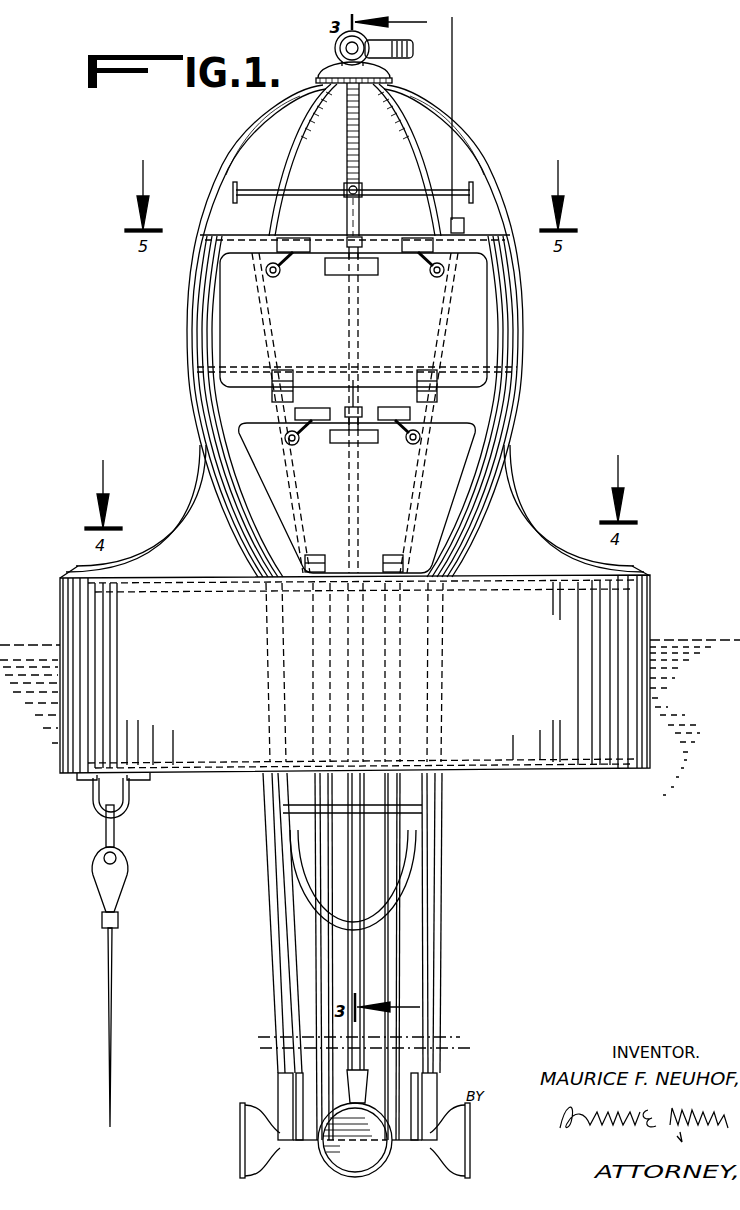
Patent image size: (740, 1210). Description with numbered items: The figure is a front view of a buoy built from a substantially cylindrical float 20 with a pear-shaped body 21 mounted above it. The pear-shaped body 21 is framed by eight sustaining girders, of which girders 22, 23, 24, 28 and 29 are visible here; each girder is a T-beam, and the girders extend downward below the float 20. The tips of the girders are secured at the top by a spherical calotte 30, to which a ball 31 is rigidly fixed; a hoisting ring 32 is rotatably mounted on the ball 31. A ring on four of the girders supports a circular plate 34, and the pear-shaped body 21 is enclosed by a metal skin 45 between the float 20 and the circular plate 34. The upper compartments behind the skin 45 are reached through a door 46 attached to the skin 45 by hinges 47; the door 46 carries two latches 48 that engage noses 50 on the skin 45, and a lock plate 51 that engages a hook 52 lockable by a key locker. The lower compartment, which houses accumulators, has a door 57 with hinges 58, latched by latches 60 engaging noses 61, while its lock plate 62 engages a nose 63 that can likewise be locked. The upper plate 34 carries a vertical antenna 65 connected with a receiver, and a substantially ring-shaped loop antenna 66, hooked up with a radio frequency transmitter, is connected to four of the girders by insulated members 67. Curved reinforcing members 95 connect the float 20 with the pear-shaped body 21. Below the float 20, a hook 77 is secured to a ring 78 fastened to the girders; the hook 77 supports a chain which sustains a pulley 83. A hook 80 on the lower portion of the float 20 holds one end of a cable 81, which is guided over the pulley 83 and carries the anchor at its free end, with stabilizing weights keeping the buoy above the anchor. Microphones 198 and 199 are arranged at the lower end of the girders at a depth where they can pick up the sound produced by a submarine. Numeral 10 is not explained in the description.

The float body 10 is at (72, 610).
The float 20 is at (656, 602).
The pear-shaped body 21 is at (535, 338).
The sustaining girder 22 is at (360, 140).
The sustaining girder 23 is at (420, 144).
The sustaining girder 24 is at (474, 157).
The sustaining girder 28 is at (227, 155).
The sustaining girder 29 is at (283, 156).
The spherical calotte 30 is at (333, 73).
The ball 31 is at (340, 46).
The hoisting ring 32 is at (415, 50).
The circular plate 34 is at (230, 233).
The metal skin 45 is at (522, 270).
The door 46 is at (235, 318).
The hinge 47 is at (280, 398).
The latch 48 is at (280, 273).
The nose 50 is at (300, 236).
The lock plate 51 is at (340, 270).
The hook 52 is at (363, 234).
The door 57 is at (453, 453).
The hinge 58 is at (387, 555).
The latch 60 is at (302, 443).
The nose 61 is at (322, 409).
The lock plate 62 is at (340, 440).
The nose 63 is at (353, 377).
The vertical antenna 65 is at (453, 69).
The loop antenna 66 is at (235, 198).
The insulated member 67 is at (233, 192).
The hook 77 is at (422, 875).
The ring 78 is at (412, 808).
The hook 80 is at (92, 802).
The cable 81 is at (111, 973).
The pulley 83 is at (328, 1146).
The curved reinforcing member 95 is at (180, 523).
The microphone 198 is at (444, 1130).
The microphone 199 is at (243, 1132).